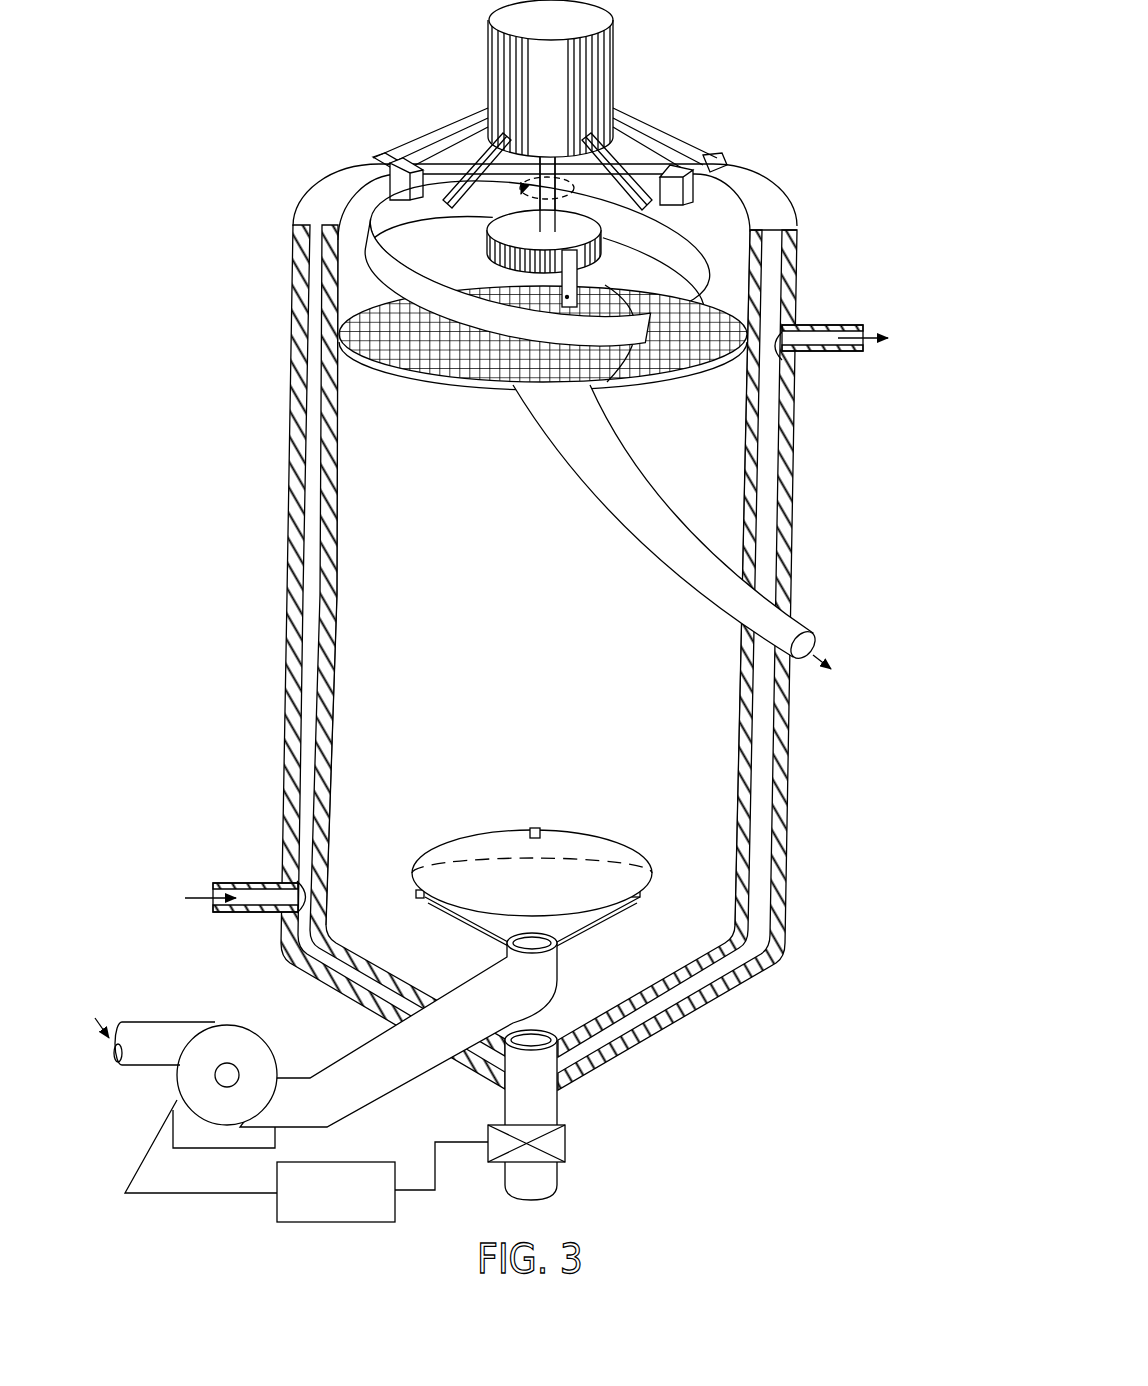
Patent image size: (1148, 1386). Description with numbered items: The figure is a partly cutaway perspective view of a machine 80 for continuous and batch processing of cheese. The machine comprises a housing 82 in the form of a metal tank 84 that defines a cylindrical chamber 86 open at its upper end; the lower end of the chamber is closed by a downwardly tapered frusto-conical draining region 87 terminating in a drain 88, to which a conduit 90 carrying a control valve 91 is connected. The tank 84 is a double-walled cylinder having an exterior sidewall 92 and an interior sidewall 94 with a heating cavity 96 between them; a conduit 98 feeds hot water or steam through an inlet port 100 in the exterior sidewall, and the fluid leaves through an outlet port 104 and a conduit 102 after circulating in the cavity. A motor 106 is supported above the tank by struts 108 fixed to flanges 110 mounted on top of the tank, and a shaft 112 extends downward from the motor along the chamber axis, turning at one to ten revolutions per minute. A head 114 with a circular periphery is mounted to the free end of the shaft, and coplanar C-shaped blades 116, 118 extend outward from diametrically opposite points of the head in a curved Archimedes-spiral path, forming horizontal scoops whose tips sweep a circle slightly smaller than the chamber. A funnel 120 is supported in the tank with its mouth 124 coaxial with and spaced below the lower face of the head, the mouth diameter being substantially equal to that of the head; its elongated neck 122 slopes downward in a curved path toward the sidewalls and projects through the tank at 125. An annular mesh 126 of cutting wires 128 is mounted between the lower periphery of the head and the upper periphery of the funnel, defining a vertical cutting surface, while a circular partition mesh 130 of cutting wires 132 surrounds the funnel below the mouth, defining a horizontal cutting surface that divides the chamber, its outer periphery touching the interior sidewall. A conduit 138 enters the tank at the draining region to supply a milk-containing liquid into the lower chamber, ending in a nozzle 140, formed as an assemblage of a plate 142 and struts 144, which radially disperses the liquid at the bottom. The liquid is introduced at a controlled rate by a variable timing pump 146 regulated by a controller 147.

The machine 80 is at (823, 158).
The housing 82 is at (254, 430).
The tank 84 is at (293, 494).
The cylindrical chamber 86 is at (530, 612).
The draining region 87 is at (612, 978).
The drain 88 is at (523, 1023).
The conduit 90 is at (549, 1114).
The control valve 91 is at (566, 1141).
The exterior sidewall 92 is at (789, 488).
The interior sidewall 94 is at (750, 487).
The heating cavity 96 is at (768, 515).
The conduit 98 is at (256, 882).
The inlet port 100 is at (308, 892).
The conduit 102 is at (825, 328).
The outlet port 104 is at (789, 362).
The motor 106 is at (570, 31).
The struts 108 is at (652, 137).
The flanges 110 is at (725, 165).
The shaft 112 is at (558, 226).
The head 114 is at (505, 228).
The blade 116 is at (672, 240).
The blade 118 is at (378, 250).
The funnel 120 is at (578, 428).
The elongated neck 122 is at (697, 587).
The mouth 124 is at (607, 393).
The projection point 125 is at (810, 609).
The mesh 126 is at (597, 265).
The cutting wires 128 is at (486, 257).
The mesh 130 is at (394, 371).
The cutting wires 132 is at (434, 369).
The conduit 138 is at (361, 1053).
The nozzle 140 is at (612, 826).
The plate 142 is at (463, 849).
The struts 144 is at (599, 928).
The variable timing pump 146 is at (250, 1030).
The controller 147 is at (410, 1170).